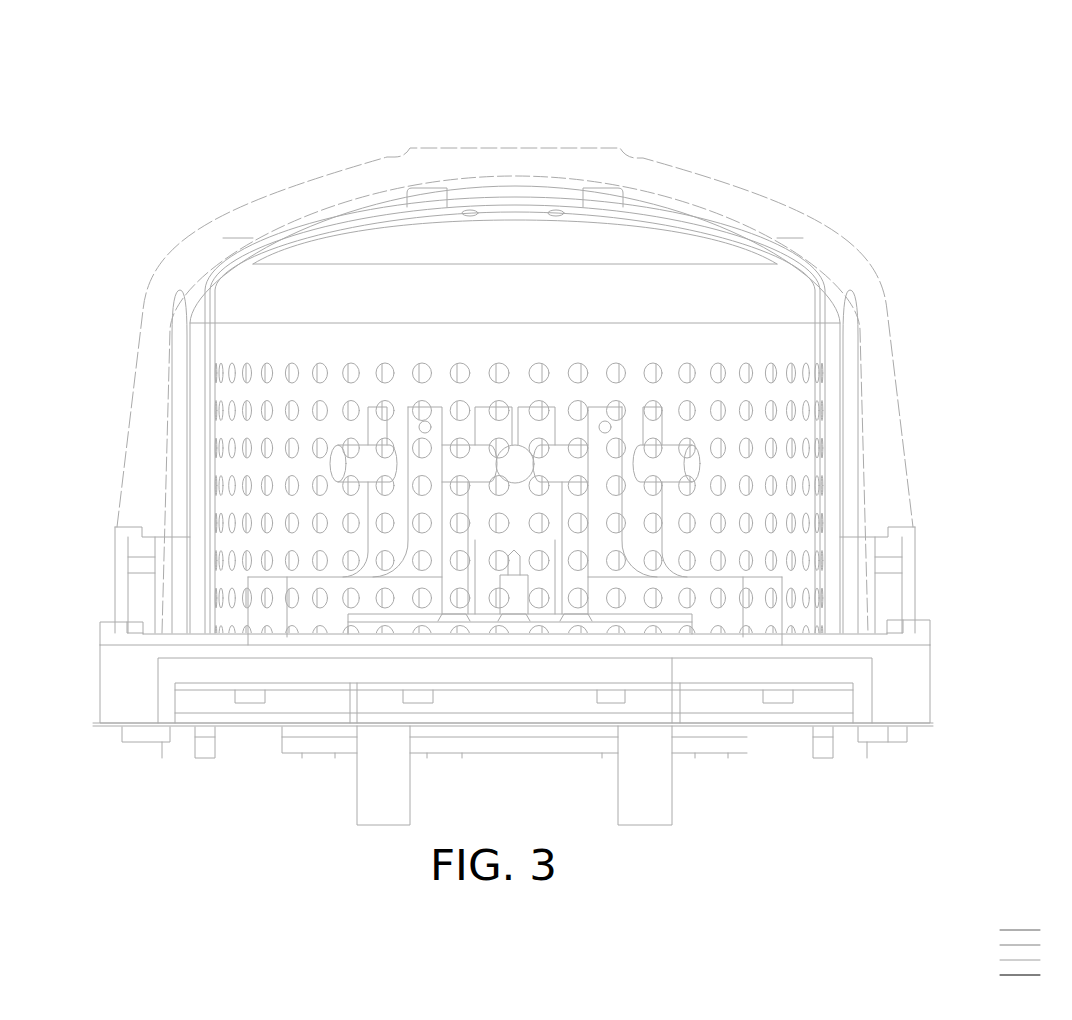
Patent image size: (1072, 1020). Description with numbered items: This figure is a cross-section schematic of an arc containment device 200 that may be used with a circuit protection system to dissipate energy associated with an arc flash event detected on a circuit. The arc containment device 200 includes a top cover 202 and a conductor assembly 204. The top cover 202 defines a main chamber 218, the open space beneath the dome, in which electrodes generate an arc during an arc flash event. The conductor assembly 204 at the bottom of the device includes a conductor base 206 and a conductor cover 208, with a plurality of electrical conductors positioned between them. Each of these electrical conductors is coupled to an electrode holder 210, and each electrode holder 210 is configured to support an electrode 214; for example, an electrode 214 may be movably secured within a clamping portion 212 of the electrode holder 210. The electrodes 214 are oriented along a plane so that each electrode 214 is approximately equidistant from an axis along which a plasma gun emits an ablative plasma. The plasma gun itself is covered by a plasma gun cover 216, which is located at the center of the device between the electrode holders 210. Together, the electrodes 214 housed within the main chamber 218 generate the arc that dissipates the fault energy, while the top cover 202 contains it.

The arc containment device 200 is at (870, 158).
The top cover 202 is at (727, 182).
The conductor assembly 204 is at (556, 399).
The conductor base 206 is at (921, 697).
The conductor cover 208 is at (928, 634).
The electrode holder 210 is at (632, 420).
The clamping portion 212 is at (406, 401).
The electrode 214 is at (458, 460).
The plasma gun cover 216 is at (490, 598).
The main chamber 218 is at (543, 282).